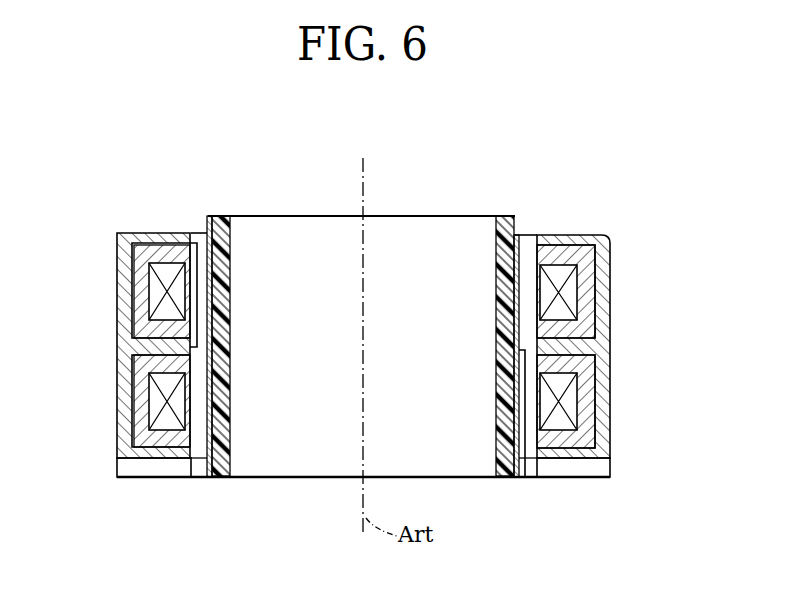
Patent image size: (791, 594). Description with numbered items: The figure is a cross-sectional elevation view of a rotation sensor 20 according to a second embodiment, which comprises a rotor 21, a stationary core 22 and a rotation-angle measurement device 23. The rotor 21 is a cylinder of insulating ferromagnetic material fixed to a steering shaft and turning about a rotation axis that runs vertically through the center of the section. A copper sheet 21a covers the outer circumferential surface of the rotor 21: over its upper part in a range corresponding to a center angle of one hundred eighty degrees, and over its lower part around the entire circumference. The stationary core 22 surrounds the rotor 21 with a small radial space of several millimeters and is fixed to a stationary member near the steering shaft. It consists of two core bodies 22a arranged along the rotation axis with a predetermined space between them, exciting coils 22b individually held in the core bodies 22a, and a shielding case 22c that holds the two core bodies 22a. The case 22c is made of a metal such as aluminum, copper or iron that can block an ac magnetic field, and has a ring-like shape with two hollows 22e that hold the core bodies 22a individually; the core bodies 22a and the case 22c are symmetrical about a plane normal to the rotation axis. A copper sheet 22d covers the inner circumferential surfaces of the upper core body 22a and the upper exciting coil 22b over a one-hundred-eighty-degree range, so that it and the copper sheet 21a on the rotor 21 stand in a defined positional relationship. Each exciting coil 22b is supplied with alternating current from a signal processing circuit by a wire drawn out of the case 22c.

The rotation sensor 20 is at (366, 329).
The rotor 21 is at (441, 213).
The copper sheet 21a is at (210, 479).
The stationary core 22 is at (365, 350).
The core body 22a is at (140, 310).
The exciting coil 22b is at (155, 413).
The shielding case 22c is at (598, 352).
The copper sheet 22d is at (193, 243).
The hollow 22e is at (137, 382).
The rotation-angle measurement device 23 is at (135, 479).